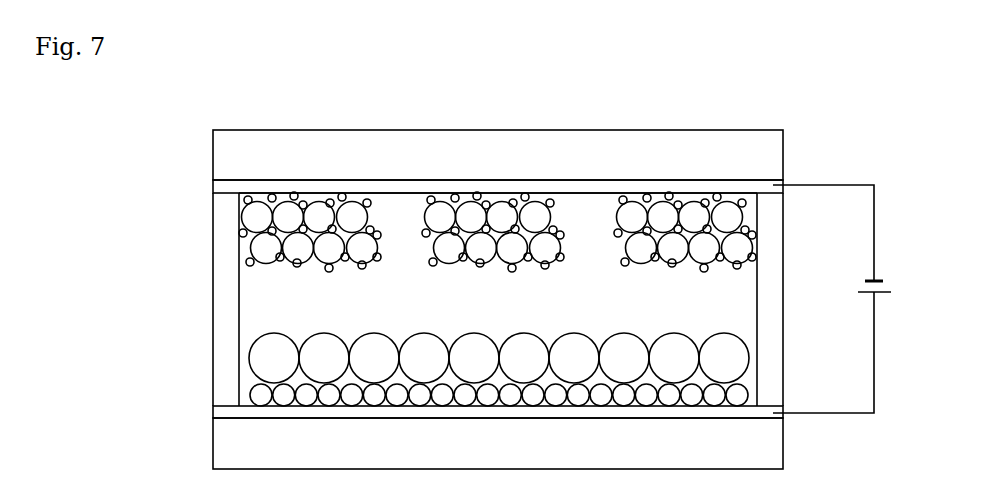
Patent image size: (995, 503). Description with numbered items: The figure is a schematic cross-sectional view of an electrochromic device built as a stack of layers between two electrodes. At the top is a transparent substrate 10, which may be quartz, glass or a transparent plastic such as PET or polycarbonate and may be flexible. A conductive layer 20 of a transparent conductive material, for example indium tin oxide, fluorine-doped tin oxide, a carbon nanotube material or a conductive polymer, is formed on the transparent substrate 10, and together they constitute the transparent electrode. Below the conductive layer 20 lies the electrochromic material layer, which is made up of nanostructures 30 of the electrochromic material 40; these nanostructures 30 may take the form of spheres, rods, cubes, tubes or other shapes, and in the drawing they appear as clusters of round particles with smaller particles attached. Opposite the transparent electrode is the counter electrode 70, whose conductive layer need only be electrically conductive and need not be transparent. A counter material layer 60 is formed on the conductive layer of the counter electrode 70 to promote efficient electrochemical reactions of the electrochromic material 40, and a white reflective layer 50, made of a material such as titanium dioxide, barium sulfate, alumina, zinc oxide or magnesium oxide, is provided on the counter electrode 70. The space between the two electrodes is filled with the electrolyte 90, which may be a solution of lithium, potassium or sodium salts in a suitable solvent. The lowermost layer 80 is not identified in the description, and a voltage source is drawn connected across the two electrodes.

The transparent substrate 10 is at (230, 153).
The conductive layer 20 is at (225, 188).
The nanostructures 30 is at (263, 250).
The electrochromic material 40 is at (283, 262).
The electrolyte 90 is at (275, 308).
The white reflective layer 50 is at (263, 345).
The counter material layer 60 is at (267, 393).
The counter electrode 70 is at (220, 413).
The second substrate 80 is at (220, 447).